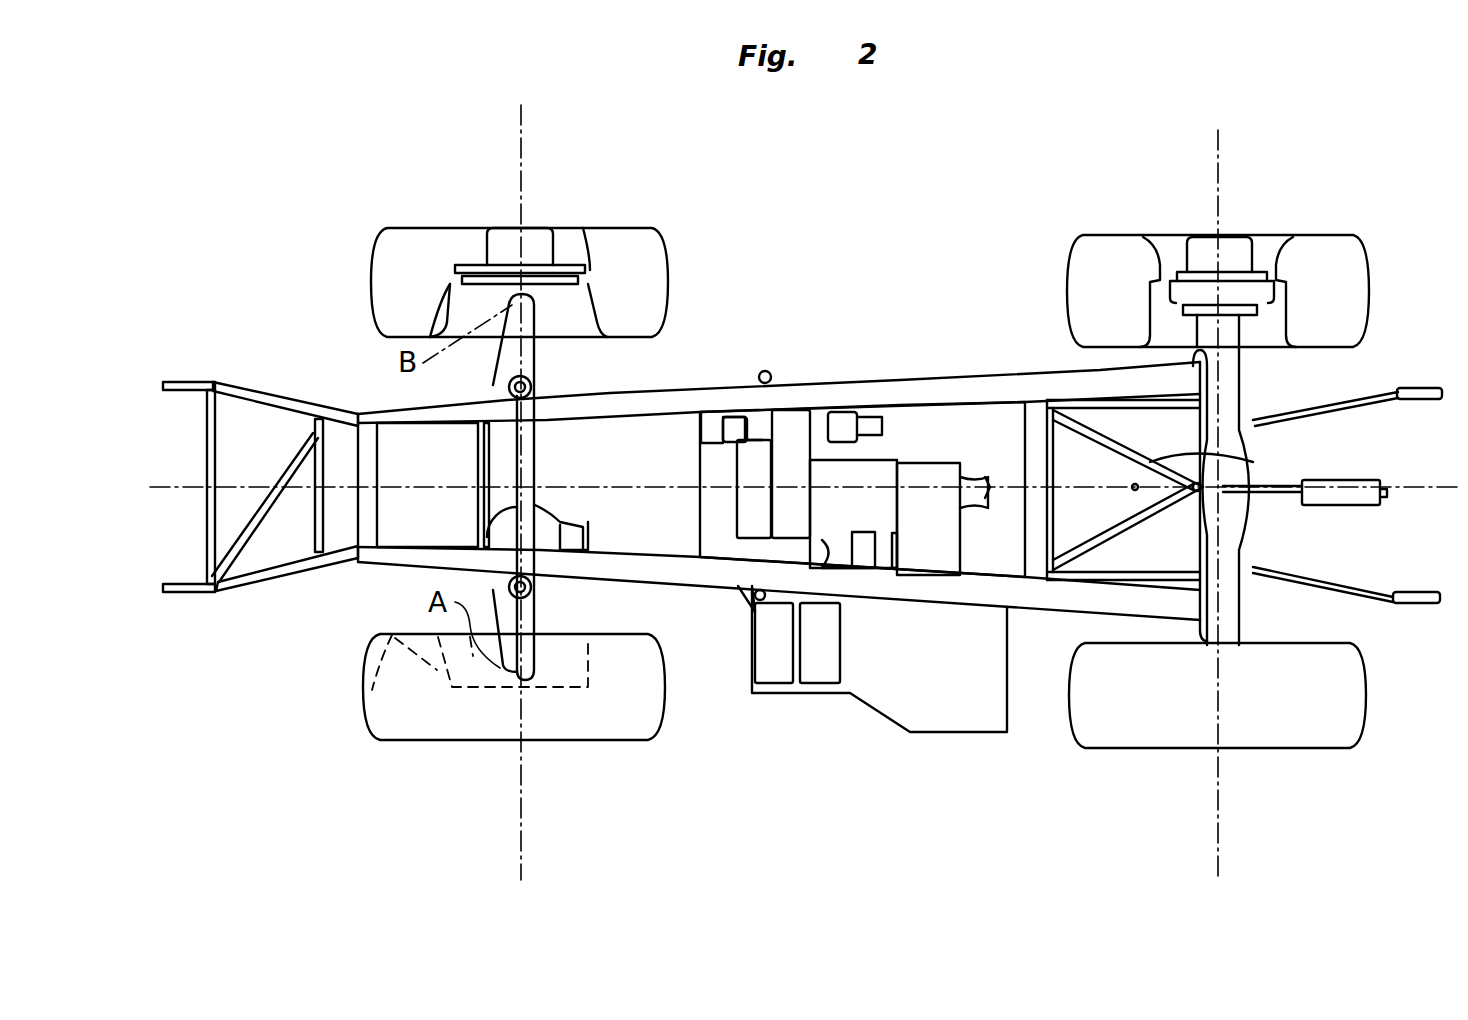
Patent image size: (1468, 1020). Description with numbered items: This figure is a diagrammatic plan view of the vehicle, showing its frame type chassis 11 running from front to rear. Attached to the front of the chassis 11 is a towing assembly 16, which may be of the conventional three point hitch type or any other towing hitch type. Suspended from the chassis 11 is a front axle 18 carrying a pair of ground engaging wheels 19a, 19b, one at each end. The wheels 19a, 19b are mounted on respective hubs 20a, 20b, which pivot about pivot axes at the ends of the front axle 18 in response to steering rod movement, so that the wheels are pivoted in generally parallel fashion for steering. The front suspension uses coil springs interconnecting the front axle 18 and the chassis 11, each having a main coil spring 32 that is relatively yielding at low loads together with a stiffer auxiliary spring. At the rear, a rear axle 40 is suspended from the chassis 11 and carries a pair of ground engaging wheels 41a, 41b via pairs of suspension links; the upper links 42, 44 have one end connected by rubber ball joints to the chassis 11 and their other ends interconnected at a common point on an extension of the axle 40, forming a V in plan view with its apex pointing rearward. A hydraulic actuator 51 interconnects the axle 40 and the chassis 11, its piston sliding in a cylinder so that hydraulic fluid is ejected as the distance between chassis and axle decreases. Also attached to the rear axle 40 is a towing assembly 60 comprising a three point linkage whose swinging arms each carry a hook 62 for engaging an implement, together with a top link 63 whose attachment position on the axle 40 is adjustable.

The chassis 11 is at (685, 432).
The towing assembly 16 is at (250, 392).
The front axle 18 is at (536, 492).
The ground engaging wheel 19a is at (572, 728).
The ground engaging wheel 19b is at (655, 243).
The hub 20a is at (398, 640).
The hub 20b is at (573, 312).
The main coil spring 32 is at (537, 381).
The rear axle 40 is at (1230, 591).
The ground engaging wheel 41a is at (1106, 246).
The ground engaging wheel 41b is at (1165, 730).
The suspension link 42 is at (1128, 528).
The suspension link 44 is at (1253, 462).
The hydraulic actuator 51 is at (1212, 353).
The towing assembly 60 is at (1363, 573).
The hook 62 is at (1437, 400).
The top link 63 is at (1272, 498).